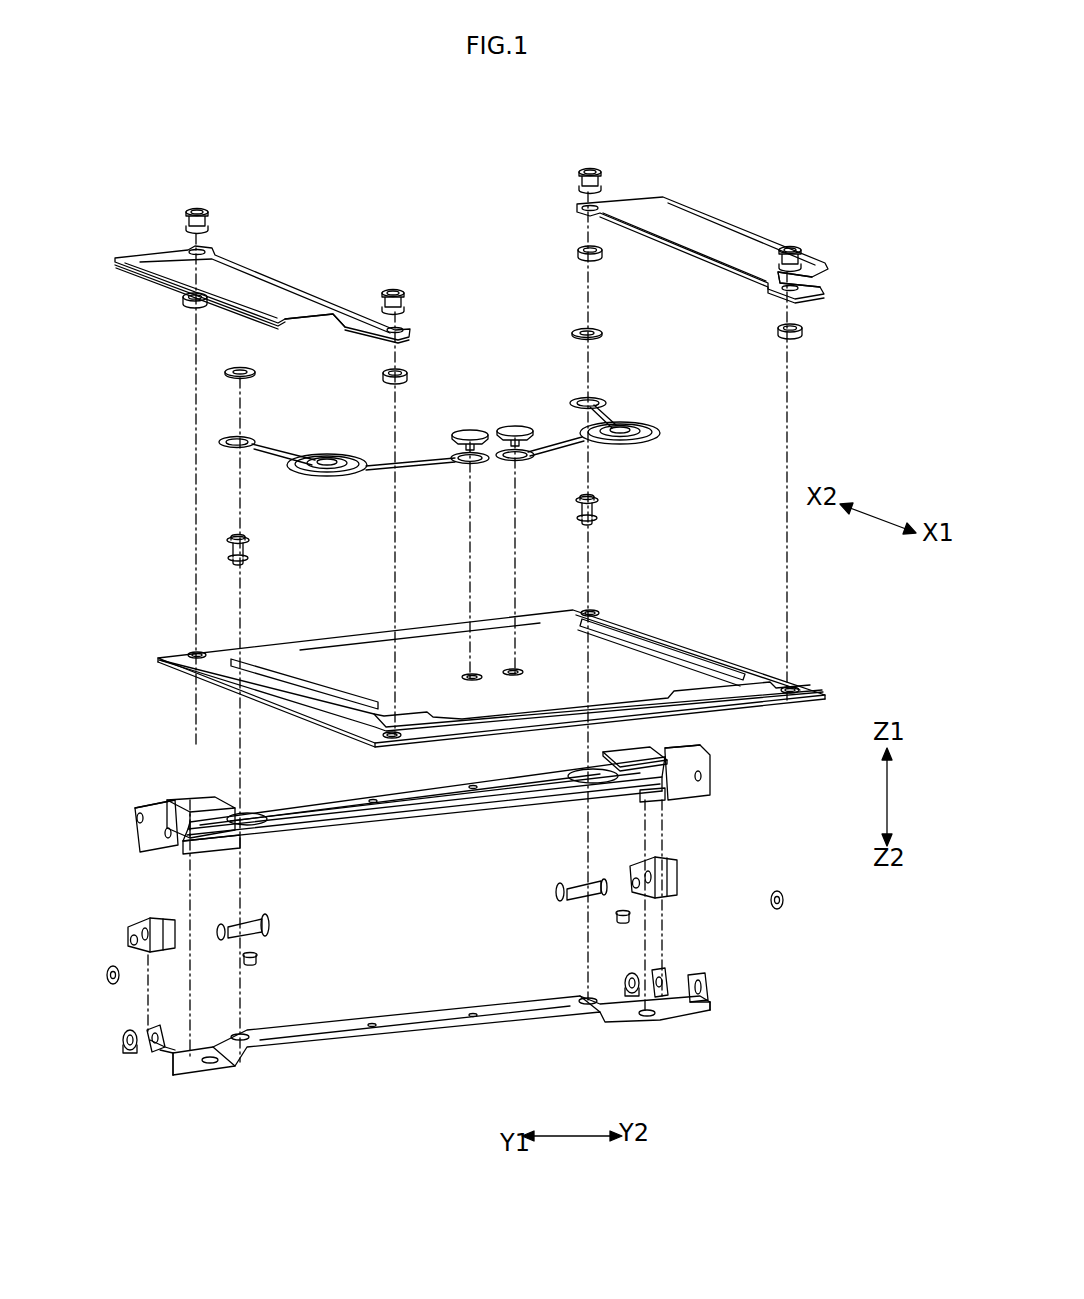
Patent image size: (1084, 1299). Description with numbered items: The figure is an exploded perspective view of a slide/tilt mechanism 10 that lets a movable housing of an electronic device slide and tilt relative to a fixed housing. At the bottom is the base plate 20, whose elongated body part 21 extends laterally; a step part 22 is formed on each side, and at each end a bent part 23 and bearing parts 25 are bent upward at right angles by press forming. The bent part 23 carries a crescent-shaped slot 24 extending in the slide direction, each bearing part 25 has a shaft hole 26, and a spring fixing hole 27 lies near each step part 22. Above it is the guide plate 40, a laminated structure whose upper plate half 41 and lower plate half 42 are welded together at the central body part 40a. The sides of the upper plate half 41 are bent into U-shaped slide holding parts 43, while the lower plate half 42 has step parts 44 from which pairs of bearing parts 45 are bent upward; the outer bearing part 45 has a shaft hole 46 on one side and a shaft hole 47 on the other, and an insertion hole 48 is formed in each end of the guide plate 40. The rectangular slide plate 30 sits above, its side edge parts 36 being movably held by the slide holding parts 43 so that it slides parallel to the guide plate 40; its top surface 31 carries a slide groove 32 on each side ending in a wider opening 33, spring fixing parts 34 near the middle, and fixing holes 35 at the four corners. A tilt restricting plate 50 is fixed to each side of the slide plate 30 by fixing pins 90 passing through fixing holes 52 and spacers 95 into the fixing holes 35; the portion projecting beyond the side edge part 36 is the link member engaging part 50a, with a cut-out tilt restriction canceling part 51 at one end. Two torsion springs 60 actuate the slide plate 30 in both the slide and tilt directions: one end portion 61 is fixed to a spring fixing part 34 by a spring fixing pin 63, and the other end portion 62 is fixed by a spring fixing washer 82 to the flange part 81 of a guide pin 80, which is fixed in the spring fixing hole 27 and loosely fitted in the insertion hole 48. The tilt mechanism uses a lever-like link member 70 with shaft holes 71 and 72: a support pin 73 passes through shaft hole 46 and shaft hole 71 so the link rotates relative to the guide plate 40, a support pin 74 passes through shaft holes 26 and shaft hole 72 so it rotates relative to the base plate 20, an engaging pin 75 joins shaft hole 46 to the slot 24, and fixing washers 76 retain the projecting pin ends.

The slide/tilt mechanism 10 is at (511, 135).
The base plate 20 is at (512, 1040).
The body part 21 is at (420, 1018).
The step part 22 is at (210, 1066).
The bent part 23 is at (165, 1072).
The slot 24 is at (152, 1052).
The bearing part 25 is at (158, 1030).
The shaft hole 26 is at (123, 1043).
The spring fixing hole 27 is at (247, 1042).
The slide plate 30 is at (345, 640).
The top surface 31 is at (540, 620).
The slide groove 32 is at (290, 690).
The opening 33 is at (440, 727).
The spring fixing part 34 is at (482, 680).
The fixing hole 35 is at (188, 654).
The side edge part 36 is at (312, 712).
The guide plate 40 is at (405, 832).
The body part 40a is at (445, 792).
The upper plate half 41 is at (342, 806).
The lower plate half 42 is at (312, 835).
The slide holding part 43 is at (200, 797).
The step part 44 is at (225, 848).
The bearing part 45 is at (160, 852).
The shaft hole 46 is at (165, 835).
The shaft hole 47 is at (160, 803).
The insertion hole 48 is at (257, 826).
The tilt restricting plate 50 is at (262, 265).
The link member engaging part 50a is at (262, 298).
The tilt restriction canceling part 51 is at (318, 336).
The fixing hole 52 is at (205, 251).
The torsion spring 60 is at (338, 485).
The one end portion 61 is at (464, 464).
The other end portion 62 is at (220, 441).
The spring fixing pin 63 is at (515, 425).
The link member 70 is at (118, 940).
The shaft hole 71 is at (144, 926).
The shaft hole 72 is at (130, 937).
The support pin 73 is at (270, 926).
The support pin 74 is at (222, 940).
The engaging pin 75 is at (258, 962).
The fixing washer 76 is at (106, 977).
The guide pin 80 is at (218, 552).
The flange part 81 is at (246, 538).
The spring fixing washer 82 is at (225, 372).
The fixing pin 90 is at (186, 213).
The spacer 95 is at (183, 299).